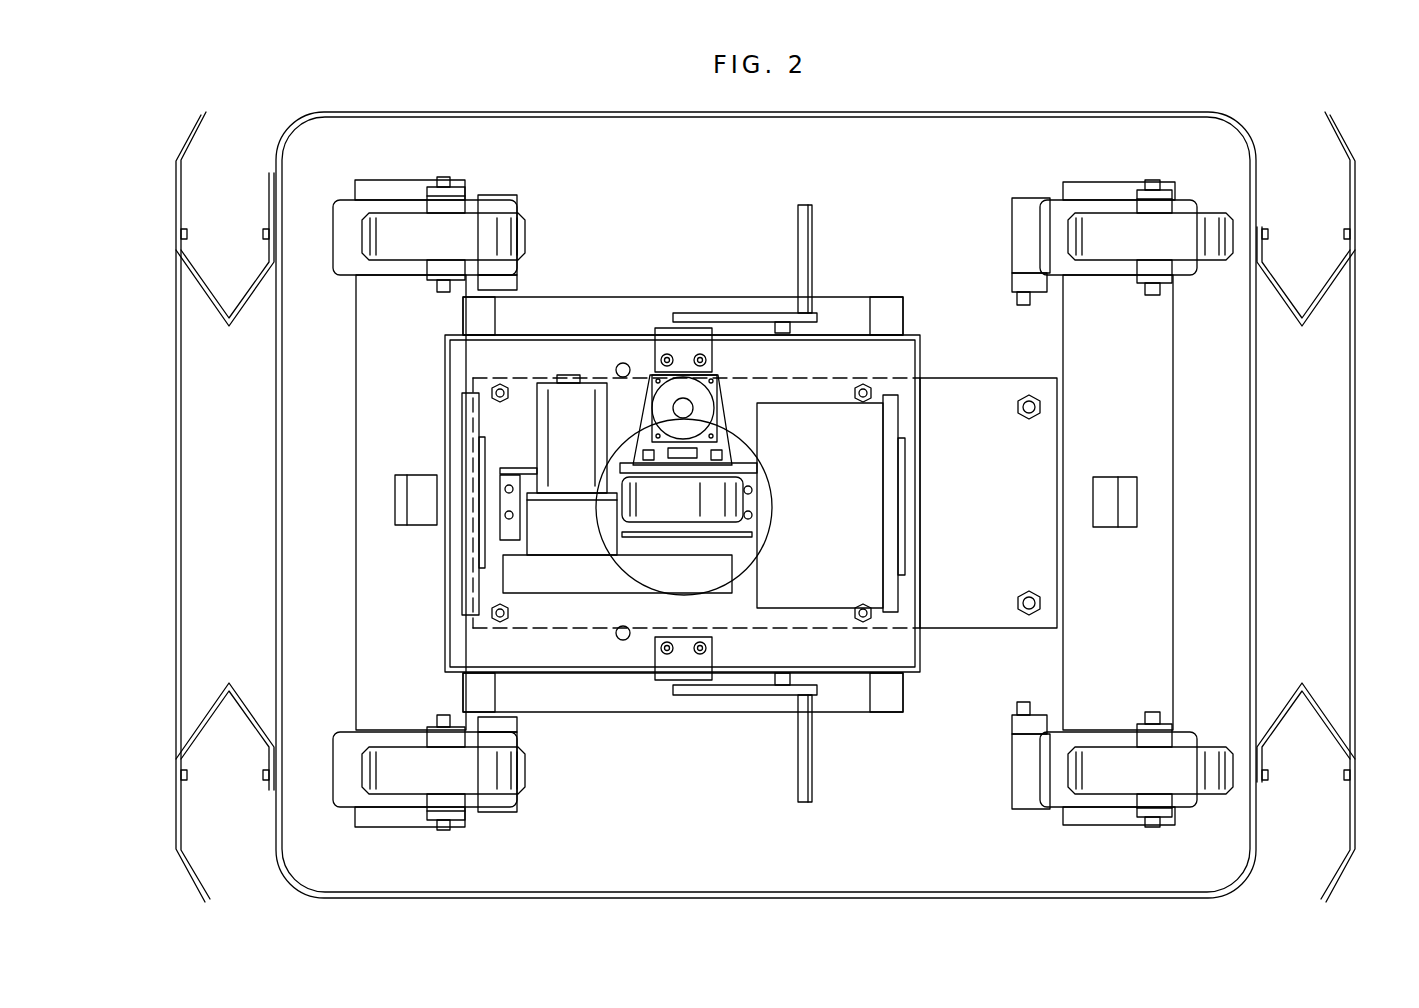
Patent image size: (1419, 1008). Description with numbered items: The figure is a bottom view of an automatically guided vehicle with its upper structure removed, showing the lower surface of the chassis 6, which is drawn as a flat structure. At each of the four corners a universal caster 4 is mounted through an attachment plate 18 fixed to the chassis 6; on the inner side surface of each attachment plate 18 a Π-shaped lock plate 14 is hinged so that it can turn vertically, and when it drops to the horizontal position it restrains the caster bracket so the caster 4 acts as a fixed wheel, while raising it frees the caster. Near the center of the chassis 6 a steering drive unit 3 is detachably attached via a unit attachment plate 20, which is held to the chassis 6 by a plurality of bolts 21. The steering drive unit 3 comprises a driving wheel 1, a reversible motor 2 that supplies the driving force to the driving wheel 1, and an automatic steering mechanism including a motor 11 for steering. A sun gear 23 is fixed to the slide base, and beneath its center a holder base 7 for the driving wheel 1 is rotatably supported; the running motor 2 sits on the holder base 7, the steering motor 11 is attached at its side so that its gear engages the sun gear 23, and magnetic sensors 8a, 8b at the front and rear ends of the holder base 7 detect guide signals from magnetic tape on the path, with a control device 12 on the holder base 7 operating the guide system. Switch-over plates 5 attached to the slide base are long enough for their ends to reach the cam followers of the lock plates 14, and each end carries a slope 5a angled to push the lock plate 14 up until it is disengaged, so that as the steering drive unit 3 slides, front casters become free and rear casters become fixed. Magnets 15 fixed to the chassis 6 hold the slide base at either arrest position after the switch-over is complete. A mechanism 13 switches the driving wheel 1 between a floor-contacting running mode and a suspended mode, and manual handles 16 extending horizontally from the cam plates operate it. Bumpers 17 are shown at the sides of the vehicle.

The driving wheel 1 is at (723, 505).
The reversible motor 2 is at (587, 398).
The steering drive unit 3 is at (852, 284).
The universal caster 4 is at (352, 250).
The switch-over plate 5 is at (565, 300).
The slope 5a is at (470, 306).
The chassis 6 is at (512, 107).
The holder base 7 is at (593, 578).
The magnetic sensor 8a is at (465, 427).
The magnetic sensor 8b is at (906, 586).
The motor for steering 11 is at (700, 398).
The control device 12 is at (862, 478).
The mechanism 13 is at (700, 300).
The lock plate 14 is at (498, 200).
The magnet 15 is at (392, 493).
The manual handle 16 is at (812, 238).
The bumper 17 is at (180, 490).
The attachment plate 18 is at (408, 186).
The unit attachment plate 20 is at (960, 392).
The bolt 21 is at (1029, 394).
The sun gear 23 is at (752, 433).